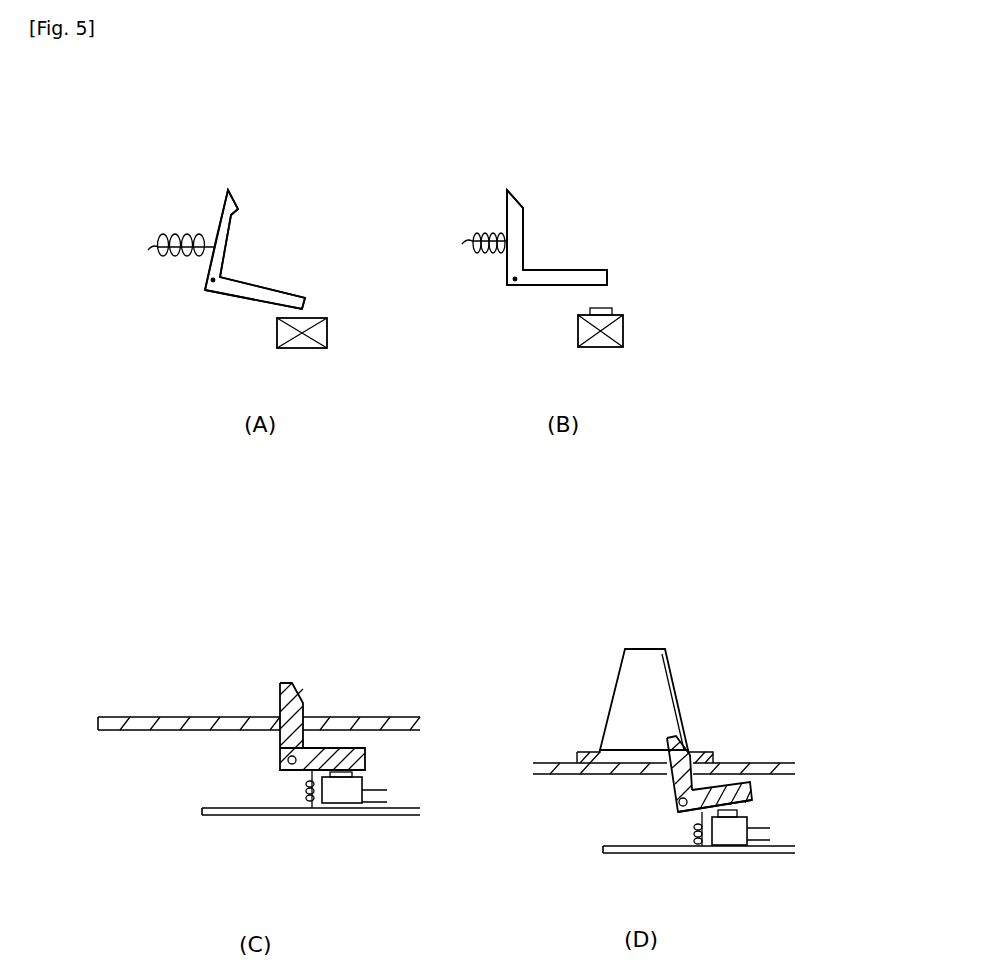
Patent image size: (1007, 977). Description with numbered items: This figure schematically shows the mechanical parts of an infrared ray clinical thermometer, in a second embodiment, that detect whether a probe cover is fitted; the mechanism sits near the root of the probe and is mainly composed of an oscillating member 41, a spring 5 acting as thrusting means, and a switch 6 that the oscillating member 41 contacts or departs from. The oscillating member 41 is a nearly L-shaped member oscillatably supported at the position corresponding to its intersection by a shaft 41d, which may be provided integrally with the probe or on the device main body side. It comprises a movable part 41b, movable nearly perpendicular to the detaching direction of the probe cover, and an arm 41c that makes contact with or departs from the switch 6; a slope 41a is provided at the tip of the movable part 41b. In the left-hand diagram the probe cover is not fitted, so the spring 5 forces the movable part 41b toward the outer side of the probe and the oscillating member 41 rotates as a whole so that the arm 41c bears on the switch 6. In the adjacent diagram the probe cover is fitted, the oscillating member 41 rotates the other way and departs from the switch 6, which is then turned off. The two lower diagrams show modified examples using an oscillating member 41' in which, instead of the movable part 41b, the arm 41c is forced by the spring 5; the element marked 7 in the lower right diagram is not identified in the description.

The oscillating member 41 is at (419, 214).
The slope 41a is at (237, 198).
The movable part 41b is at (231, 222).
The arm 41c is at (290, 300).
The shaft 41d is at (209, 292).
The oscillating member 41' is at (482, 738).
The spring 5 is at (173, 238).
The switch 6 is at (323, 331).
The cassette projection 7 is at (613, 673).